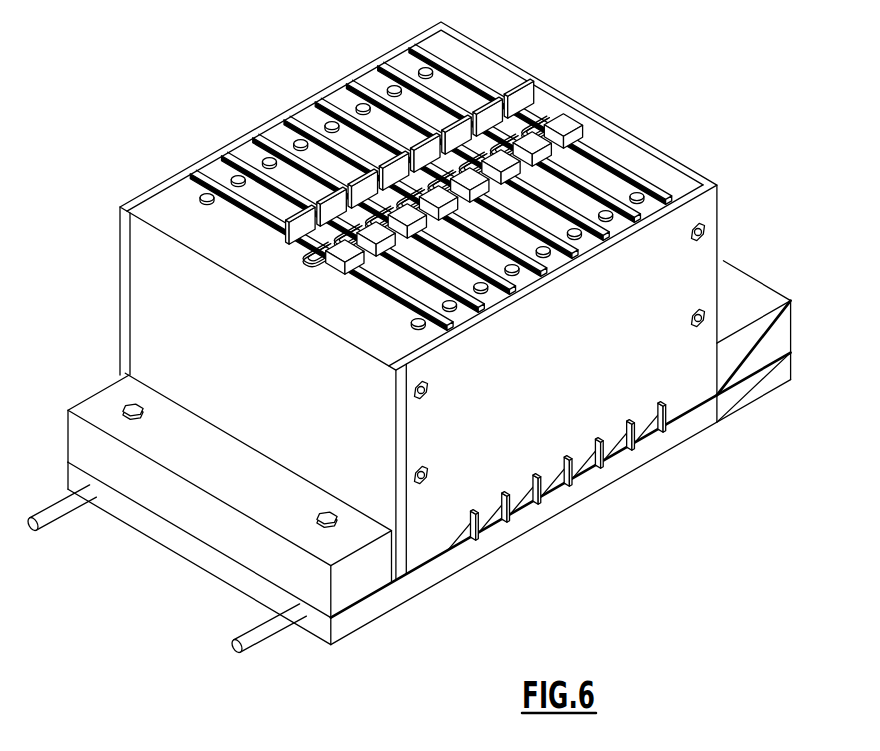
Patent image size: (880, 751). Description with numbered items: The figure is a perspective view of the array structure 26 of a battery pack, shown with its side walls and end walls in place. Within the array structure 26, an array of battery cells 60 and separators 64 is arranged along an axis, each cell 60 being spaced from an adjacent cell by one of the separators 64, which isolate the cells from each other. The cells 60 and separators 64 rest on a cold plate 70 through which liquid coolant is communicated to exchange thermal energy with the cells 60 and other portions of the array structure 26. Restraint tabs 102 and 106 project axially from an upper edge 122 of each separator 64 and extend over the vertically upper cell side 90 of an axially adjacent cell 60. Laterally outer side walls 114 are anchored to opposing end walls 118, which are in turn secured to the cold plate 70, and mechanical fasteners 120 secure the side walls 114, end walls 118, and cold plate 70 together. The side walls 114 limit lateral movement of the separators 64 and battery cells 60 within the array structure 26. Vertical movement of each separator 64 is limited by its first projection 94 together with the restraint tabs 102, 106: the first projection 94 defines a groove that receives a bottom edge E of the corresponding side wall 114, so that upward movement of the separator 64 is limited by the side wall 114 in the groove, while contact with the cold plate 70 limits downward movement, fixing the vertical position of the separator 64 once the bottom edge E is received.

The array structure 26 is at (708, 168).
The battery cell 60 is at (566, 190).
The separator 64 is at (540, 213).
The cold plate 70 is at (183, 543).
The vertically upper cell side 90 is at (587, 242).
The first projection 94 is at (525, 522).
The restraint tab 102 is at (348, 268).
The restraint tab 106 is at (300, 223).
The side wall 114 is at (340, 86).
The end wall 118 is at (153, 302).
The mechanical fastener 120 is at (428, 393).
The upper edge 122 is at (607, 190).
The bottom edge E is at (430, 560).